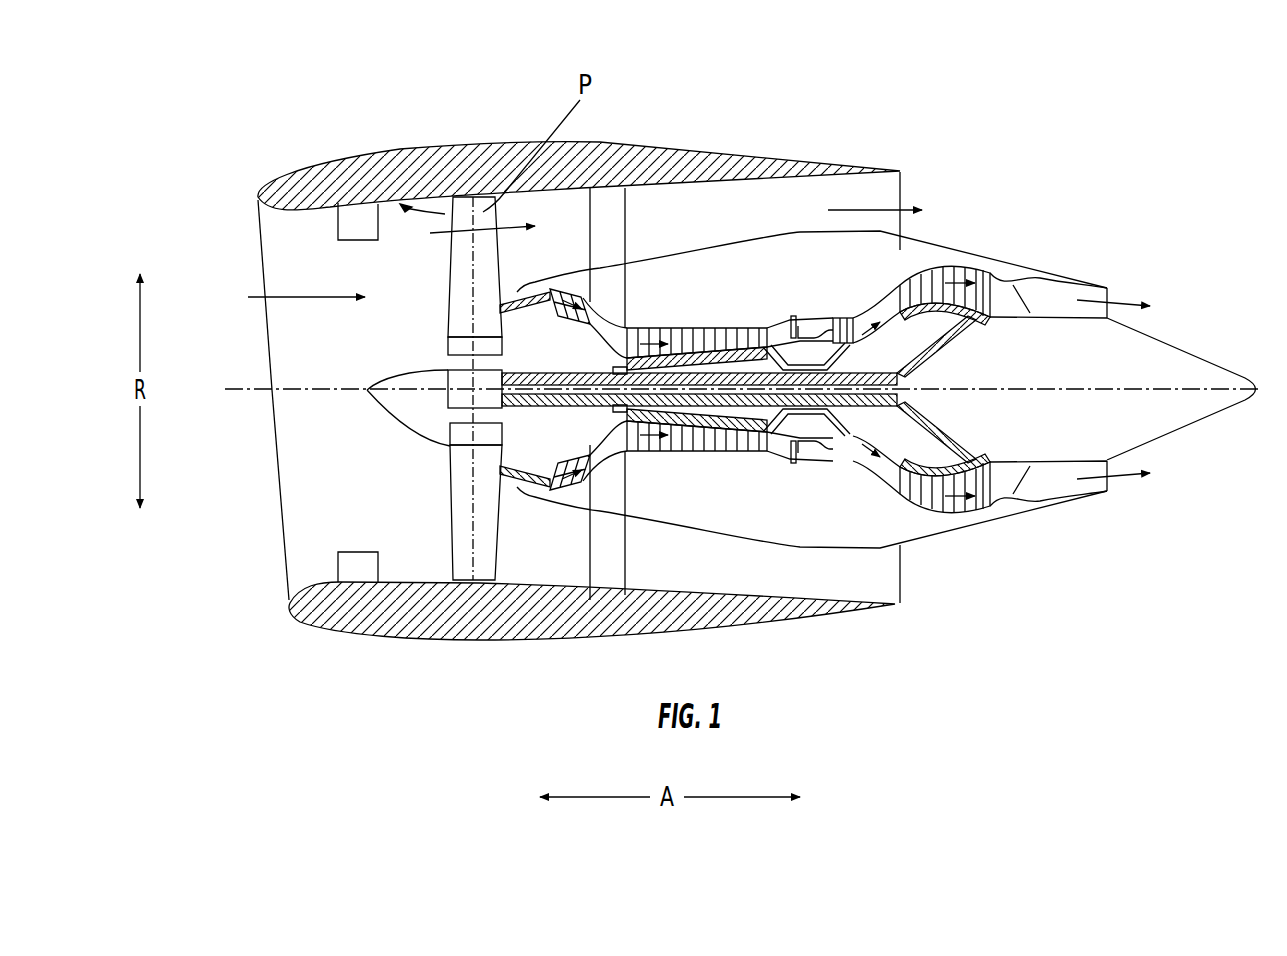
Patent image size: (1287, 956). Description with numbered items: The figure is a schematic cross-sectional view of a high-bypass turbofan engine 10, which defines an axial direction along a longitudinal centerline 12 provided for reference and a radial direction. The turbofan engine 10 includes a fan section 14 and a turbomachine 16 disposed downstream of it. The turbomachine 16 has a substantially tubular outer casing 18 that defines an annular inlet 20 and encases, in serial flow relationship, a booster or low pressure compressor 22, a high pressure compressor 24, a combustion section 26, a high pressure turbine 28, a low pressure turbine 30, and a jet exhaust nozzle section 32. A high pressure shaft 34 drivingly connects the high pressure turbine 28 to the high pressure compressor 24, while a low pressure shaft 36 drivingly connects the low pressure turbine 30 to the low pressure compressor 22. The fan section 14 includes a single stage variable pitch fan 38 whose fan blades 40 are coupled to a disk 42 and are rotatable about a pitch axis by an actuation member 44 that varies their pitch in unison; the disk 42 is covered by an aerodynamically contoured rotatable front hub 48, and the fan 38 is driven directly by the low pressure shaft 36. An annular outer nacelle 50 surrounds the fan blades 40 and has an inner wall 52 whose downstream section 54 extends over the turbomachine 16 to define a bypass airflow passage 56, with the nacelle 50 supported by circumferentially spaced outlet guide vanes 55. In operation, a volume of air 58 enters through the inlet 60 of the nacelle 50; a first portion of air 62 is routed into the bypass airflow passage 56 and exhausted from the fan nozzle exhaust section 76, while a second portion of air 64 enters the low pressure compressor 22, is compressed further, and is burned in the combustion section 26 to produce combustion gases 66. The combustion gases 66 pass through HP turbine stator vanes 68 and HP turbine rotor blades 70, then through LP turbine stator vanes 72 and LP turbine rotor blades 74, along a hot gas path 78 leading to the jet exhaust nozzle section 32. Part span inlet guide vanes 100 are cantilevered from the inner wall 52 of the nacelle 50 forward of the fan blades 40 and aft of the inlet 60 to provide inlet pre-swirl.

The turbofan engine 10 is at (1033, 153).
The longitudinal centerline 12 is at (1053, 385).
The fan section 14 is at (487, 108).
The turbomachine 16 is at (780, 288).
The outer casing 18 is at (770, 540).
The annular inlet 20 is at (540, 487).
The low pressure compressor 22 is at (590, 452).
The high pressure compressor 24 is at (650, 453).
The combustion section 26 is at (806, 458).
The high pressure turbine 28 is at (950, 440).
The low pressure turbine 30 is at (978, 508).
The jet exhaust nozzle section 32 is at (1033, 490).
The high pressure shaft 34 is at (833, 350).
The low pressure shaft 36 is at (927, 355).
The variable pitch fan 38 is at (418, 437).
The fan blades 40 is at (447, 528).
The disk 42 is at (468, 348).
The actuation member 44 is at (448, 372).
The front hub 48 is at (377, 404).
The outer nacelle 50 is at (492, 642).
The inner wall 52 is at (433, 195).
The downstream section 54 is at (832, 166).
The outlet guide vanes 55 is at (630, 213).
The bypass airflow passage 56 is at (736, 228).
The volume of air 58 is at (303, 300).
The inlet 60 is at (280, 590).
The first portion of air 62 is at (470, 218).
The second portion of air 64 is at (527, 290).
The combustion gases 66 is at (847, 320).
The HP turbine stator vanes 68 is at (815, 462).
The HP turbine rotor blades 70 is at (885, 432).
The LP turbine stator vanes 72 is at (912, 493).
The LP turbine rotor blades 74 is at (920, 495).
The fan nozzle exhaust section 76 is at (895, 192).
The hot gas path 78 is at (882, 300).
The part span inlet guide vanes 100 is at (355, 212).